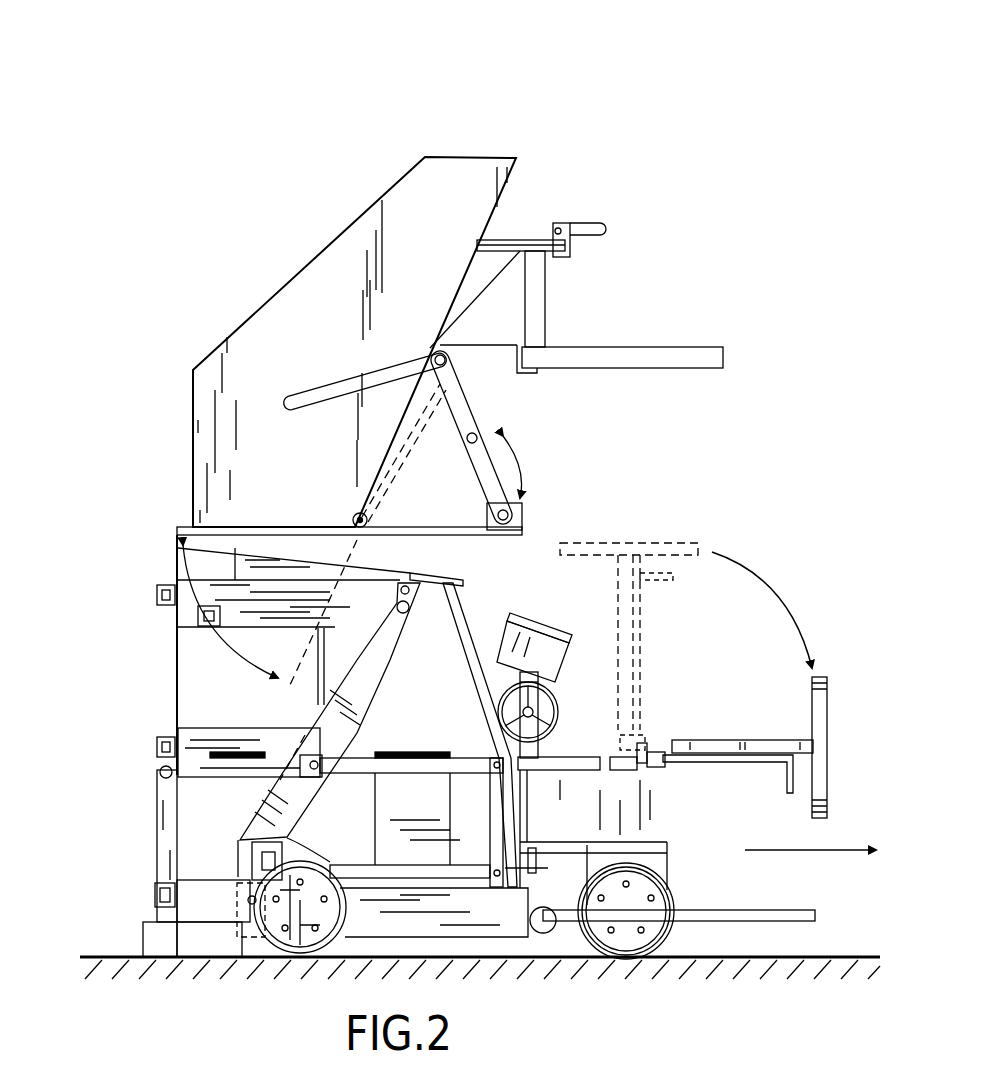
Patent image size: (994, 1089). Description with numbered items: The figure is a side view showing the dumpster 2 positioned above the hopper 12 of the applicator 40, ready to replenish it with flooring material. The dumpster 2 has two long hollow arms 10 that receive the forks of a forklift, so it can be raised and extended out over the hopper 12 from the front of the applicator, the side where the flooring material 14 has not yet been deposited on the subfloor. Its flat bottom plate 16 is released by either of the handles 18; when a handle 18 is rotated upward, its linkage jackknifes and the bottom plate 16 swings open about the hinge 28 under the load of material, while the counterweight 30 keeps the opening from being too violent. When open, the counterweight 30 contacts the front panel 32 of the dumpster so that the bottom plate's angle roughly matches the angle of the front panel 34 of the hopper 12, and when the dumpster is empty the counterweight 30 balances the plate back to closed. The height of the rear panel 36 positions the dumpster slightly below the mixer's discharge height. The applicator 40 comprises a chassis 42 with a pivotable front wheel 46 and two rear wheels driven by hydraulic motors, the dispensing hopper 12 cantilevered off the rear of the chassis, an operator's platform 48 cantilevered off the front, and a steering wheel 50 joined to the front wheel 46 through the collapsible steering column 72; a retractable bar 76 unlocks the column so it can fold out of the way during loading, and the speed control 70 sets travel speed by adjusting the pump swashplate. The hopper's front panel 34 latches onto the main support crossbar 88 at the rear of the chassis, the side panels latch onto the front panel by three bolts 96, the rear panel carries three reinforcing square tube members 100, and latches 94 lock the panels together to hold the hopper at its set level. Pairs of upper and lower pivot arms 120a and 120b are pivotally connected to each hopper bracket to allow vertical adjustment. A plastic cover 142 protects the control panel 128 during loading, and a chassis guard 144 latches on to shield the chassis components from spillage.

The dumpster 2 is at (265, 306).
The hollow arms 10 is at (682, 349).
The hopper 12 is at (190, 672).
The flooring material 14 is at (143, 952).
The bottom plate 16 is at (292, 537).
The handles 18 is at (314, 388).
The hinge 28 is at (372, 520).
The counterweight 30 is at (523, 518).
The front panel 32 is at (450, 366).
The front panel 34 is at (318, 700).
The rear panel 36 is at (191, 418).
The applicator 40 is at (157, 843).
The chassis 42 is at (470, 928).
The front wheel 46 is at (666, 930).
The operator's platform 48 is at (762, 922).
The steering wheel 50 is at (822, 738).
The speed control 70 is at (552, 720).
The steering column 72 is at (705, 742).
The retractable bar 76 is at (645, 724).
The main support crossbar 88 is at (252, 860).
The latches 94 is at (339, 666).
The bolts 96 is at (398, 590).
The reinforcing square tube members 100 is at (160, 584).
The upper pivot arm 120a is at (468, 755).
The lower pivot arm 120b is at (345, 862).
The control panel 128 is at (562, 635).
The plastic cover 142 is at (512, 610).
The chassis guard 144 is at (453, 600).